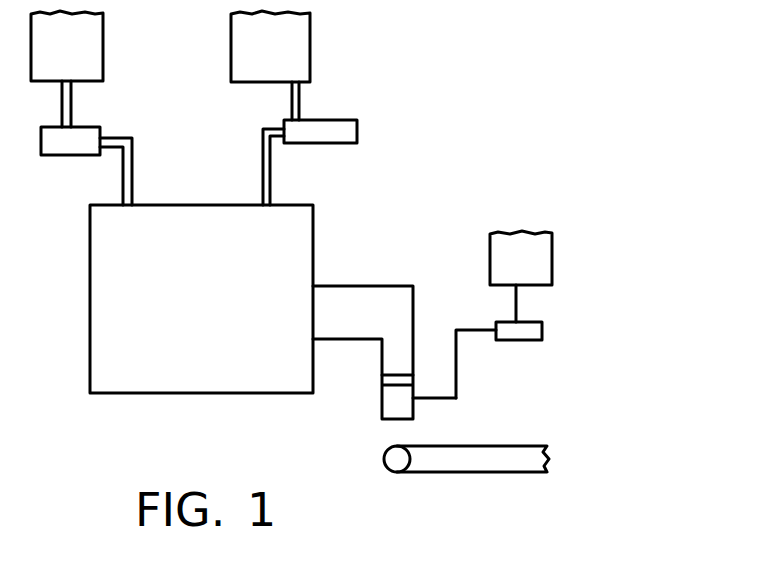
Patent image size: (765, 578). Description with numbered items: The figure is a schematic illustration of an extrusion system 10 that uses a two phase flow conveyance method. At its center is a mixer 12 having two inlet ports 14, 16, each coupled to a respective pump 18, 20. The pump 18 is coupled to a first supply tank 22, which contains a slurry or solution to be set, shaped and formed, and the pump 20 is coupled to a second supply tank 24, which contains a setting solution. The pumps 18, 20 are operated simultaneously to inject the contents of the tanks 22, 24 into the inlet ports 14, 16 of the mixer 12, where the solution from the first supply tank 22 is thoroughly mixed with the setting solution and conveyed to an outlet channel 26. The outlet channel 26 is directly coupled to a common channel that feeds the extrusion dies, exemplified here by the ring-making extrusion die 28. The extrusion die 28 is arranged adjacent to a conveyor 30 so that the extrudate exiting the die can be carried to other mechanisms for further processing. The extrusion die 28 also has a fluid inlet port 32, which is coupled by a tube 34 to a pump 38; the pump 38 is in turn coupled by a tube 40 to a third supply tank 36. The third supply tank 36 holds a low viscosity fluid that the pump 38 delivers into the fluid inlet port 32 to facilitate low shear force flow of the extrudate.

The extrusion system 10 is at (423, 157).
The mixer 12 is at (100, 224).
The inlet port 14 is at (133, 183).
The inlet port 16 is at (262, 168).
The pump 18 is at (88, 133).
The pump 20 is at (344, 126).
The first supply tank 22 is at (110, 44).
The second supply tank 24 is at (307, 44).
The outlet channel 26 is at (338, 289).
The extrusion die 28 is at (382, 396).
The conveyor 30 is at (447, 465).
The fluid inlet port 32 is at (415, 398).
The tube 34 is at (457, 345).
The third supply tank 36 is at (559, 253).
The pump 38 is at (533, 335).
The tube 40 is at (516, 303).